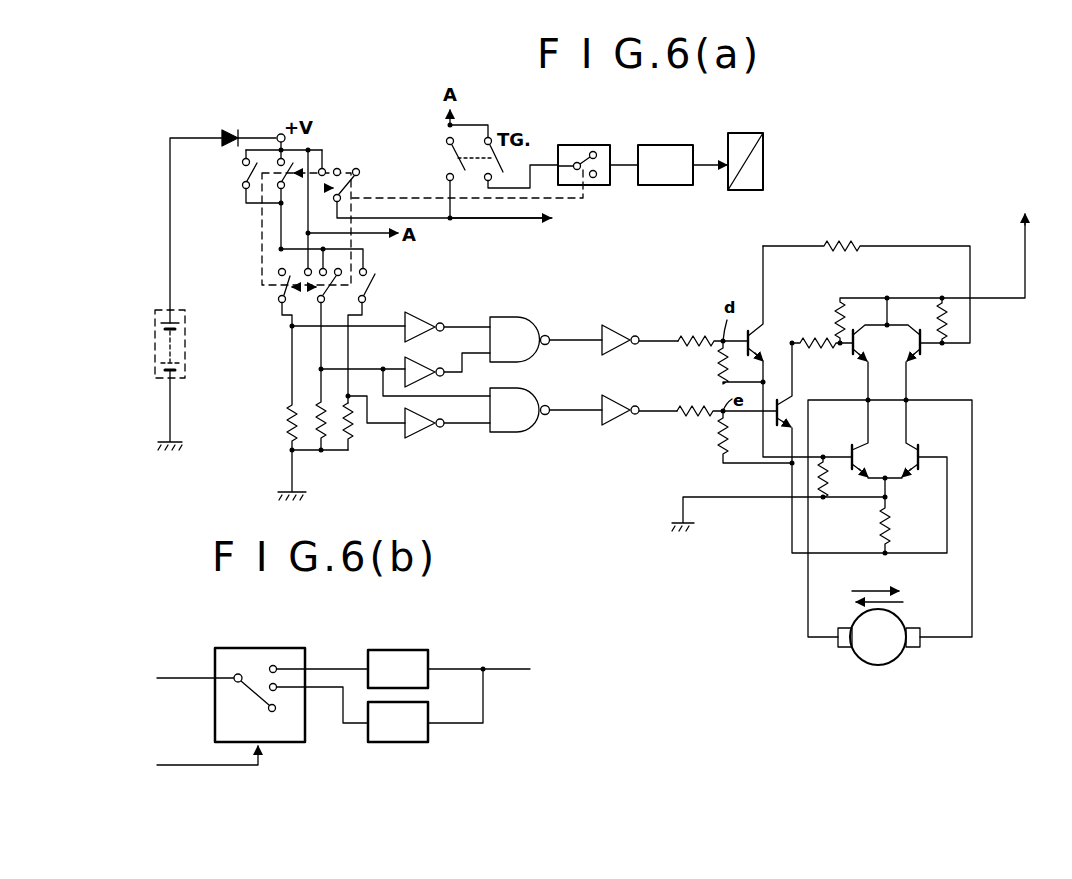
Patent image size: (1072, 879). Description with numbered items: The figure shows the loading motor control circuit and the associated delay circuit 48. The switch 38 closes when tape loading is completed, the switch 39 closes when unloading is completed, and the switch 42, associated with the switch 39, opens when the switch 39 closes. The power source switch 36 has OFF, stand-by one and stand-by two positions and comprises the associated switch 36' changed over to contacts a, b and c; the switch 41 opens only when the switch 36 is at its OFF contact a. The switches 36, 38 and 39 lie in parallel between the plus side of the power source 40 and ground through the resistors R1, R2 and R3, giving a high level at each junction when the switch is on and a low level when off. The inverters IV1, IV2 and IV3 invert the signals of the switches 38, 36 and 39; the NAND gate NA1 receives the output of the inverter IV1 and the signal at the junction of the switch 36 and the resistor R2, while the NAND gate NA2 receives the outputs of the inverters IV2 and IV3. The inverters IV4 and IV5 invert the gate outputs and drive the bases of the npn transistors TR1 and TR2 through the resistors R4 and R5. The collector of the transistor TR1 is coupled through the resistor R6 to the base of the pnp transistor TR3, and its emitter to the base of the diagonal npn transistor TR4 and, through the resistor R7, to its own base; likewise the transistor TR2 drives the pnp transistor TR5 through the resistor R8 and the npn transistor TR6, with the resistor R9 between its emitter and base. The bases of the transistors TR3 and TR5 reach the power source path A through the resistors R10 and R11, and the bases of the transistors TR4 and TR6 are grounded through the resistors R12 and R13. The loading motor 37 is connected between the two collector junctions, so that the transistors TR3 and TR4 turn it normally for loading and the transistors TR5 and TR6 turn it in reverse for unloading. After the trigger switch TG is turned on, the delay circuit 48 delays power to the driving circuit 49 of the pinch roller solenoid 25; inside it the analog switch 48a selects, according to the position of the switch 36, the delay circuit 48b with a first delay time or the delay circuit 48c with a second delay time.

The pinch roller pressing solenoid 25 is at (748, 133).
The power source switch 36 is at (338, 258).
The associated switch 36' is at (336, 322).
The loading motor 37 is at (900, 657).
The switch 38 is at (372, 286).
The switch 39 is at (276, 294).
The battery 40 is at (186, 367).
The switch 41 is at (240, 177).
The switch 42 is at (287, 190).
The delay circuit 48 is at (586, 145).
The analog switch 48a is at (261, 648).
The delay circuit 48b is at (430, 742).
The delay circuit 48c is at (399, 650).
The driving circuit 49 is at (668, 145).
The resistor R1 is at (284, 425).
The resistor R2 is at (317, 446).
The resistor R3 is at (352, 432).
The resistor R4 is at (696, 418).
The resistor R5 is at (686, 337).
The resistor R6 is at (812, 338).
The resistor R7 is at (720, 440).
The resistor R8 is at (850, 243).
The resistor R9 is at (718, 372).
The resistor R10 is at (838, 301).
The resistor R11 is at (950, 322).
The resistor R12 is at (892, 524).
The resistor R13 is at (830, 490).
The inverter IV1 is at (425, 438).
The inverter IV2 is at (422, 358).
The inverter IV3 is at (422, 312).
The inverter IV4 is at (614, 425).
The inverter IV5 is at (614, 325).
The NAND gate NA1 is at (525, 432).
The NAND gate NA2 is at (525, 317).
The npn switching transistor TR1 is at (790, 408).
The npn switching transistor TR2 is at (762, 343).
The pnp switching transistor TR3 is at (858, 345).
The npn switching transistor TR4 is at (922, 446).
The pnp switching transistor TR5 is at (925, 350).
The npn switching transistor TR6 is at (845, 446).